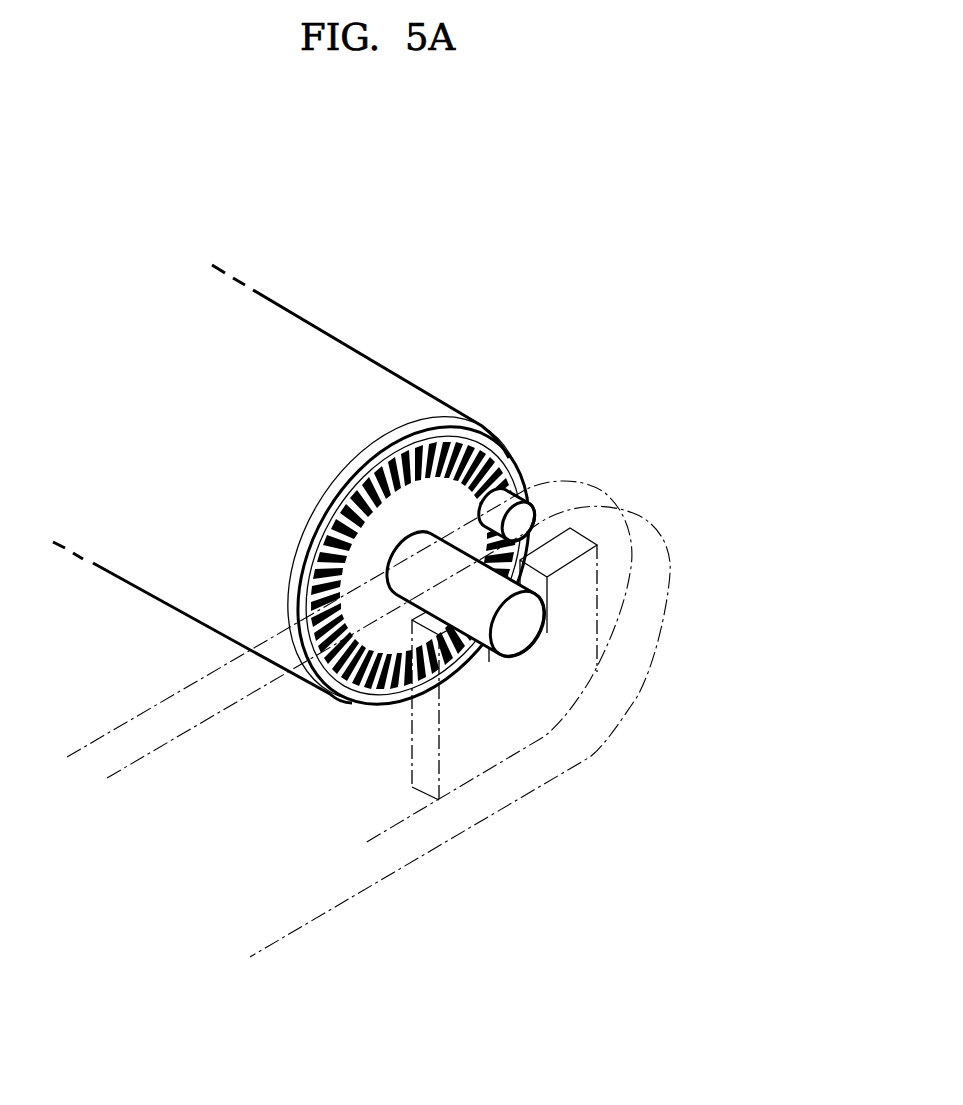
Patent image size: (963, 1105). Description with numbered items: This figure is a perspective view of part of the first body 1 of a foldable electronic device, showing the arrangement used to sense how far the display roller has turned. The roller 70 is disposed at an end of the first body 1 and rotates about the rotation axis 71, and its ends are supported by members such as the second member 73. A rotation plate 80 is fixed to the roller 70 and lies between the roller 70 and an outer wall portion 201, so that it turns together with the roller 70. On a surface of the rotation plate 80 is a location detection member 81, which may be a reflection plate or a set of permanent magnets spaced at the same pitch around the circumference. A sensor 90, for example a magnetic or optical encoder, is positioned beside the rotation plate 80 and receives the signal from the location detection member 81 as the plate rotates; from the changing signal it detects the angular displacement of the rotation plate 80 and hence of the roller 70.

The first body 1 is at (634, 328).
The roller 70 is at (358, 368).
The rotation axis 71 is at (530, 617).
The second member 73 is at (563, 668).
The rotation plate 80 is at (433, 432).
The location detection member 81 is at (503, 462).
The sensor 90 is at (525, 518).
The outer wall portion 201 is at (568, 737).